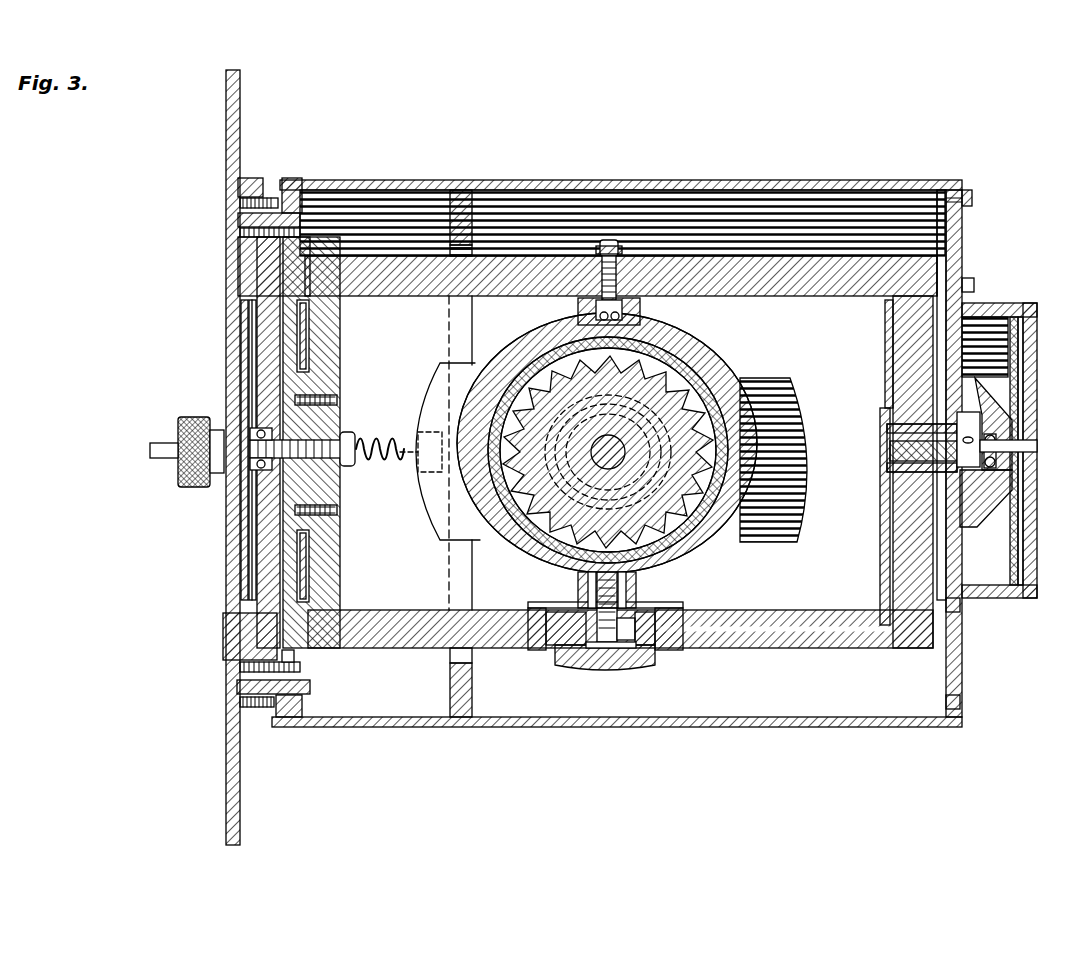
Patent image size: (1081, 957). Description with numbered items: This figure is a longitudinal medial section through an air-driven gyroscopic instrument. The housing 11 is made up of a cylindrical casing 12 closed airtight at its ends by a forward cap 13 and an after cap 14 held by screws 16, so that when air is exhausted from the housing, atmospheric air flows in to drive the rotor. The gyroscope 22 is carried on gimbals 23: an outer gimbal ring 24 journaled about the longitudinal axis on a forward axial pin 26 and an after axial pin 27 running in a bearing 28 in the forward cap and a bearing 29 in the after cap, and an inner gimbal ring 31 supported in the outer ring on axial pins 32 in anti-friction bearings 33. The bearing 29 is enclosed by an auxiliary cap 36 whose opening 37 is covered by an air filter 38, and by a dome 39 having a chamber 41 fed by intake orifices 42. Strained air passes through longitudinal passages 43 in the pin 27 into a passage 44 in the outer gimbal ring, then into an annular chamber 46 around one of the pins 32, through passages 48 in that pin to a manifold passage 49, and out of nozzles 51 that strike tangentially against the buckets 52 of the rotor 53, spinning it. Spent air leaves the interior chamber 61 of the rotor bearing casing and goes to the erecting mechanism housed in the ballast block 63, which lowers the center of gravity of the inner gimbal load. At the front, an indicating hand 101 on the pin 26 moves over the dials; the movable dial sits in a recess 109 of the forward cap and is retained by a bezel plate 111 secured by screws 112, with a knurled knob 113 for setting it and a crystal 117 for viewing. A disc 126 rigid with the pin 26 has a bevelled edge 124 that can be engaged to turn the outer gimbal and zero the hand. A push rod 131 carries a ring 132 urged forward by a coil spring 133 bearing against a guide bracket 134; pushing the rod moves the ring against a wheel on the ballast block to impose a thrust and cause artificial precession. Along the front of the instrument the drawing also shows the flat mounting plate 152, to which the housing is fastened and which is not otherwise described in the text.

The housing 11 is at (780, 180).
The casing 12 is at (855, 728).
The forward cap 13 is at (268, 360).
The after cap 14 is at (962, 266).
The screws 16 is at (290, 190).
The gyroscope 22 is at (742, 372).
The gimbals 23 is at (398, 668).
The outer gimbal ring 24 is at (785, 650).
The forward axial pin 26 is at (330, 440).
The after axial pin 27 is at (880, 445).
The forward bearing 28 is at (258, 470).
The after bearing 29 is at (996, 446).
The inner gimbal ring 31 is at (705, 562).
The axial pins 32 is at (625, 300).
The anti-friction bearings 33 is at (596, 300).
The auxiliary cap 36 is at (1020, 596).
The opening 37 is at (1023, 550).
The air filter 38 is at (1018, 518).
The dome 39 is at (995, 400).
The chamber 41 is at (980, 425).
The intake orifices 42 is at (985, 385).
The longitudinal passages 43 is at (890, 452).
The passage 44 is at (893, 530).
The annular chamber 46 is at (648, 655).
The longitudinal passages 48 is at (578, 590).
The manifold passage 49 is at (690, 368).
The nozzles 51 is at (730, 452).
The buckets 52 is at (560, 385).
The rotor 53 is at (495, 482).
The interior chamber 61 is at (660, 375).
The ballast block 63 is at (796, 380).
The indicating hand 101 is at (249, 410).
The recess 109 is at (241, 312).
The bezel plate 111 is at (240, 268).
The screws 112 is at (240, 222).
The knurled knob 113 is at (172, 460).
The crystal 117 is at (241, 570).
The bevelled edge 124 is at (309, 305).
The disc 126 is at (309, 344).
The push rod 131 is at (176, 445).
The ring 132 is at (470, 190).
The coil spring 133 is at (390, 460).
The guide bracket 134 is at (438, 432).
The mounting plate 152 is at (226, 785).